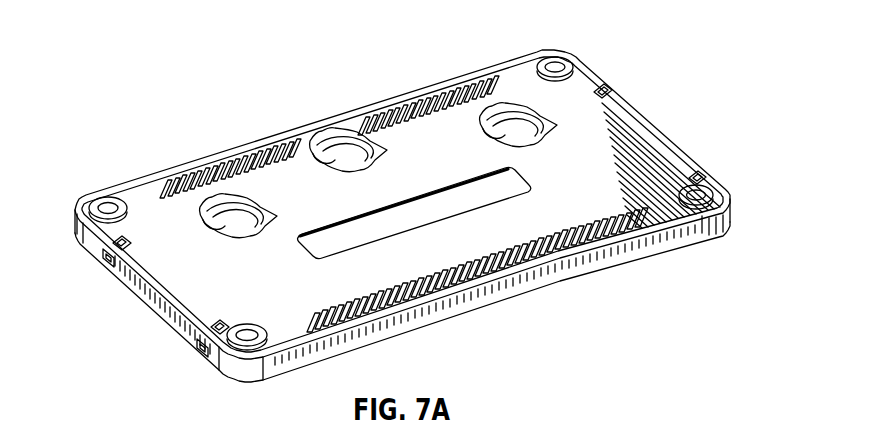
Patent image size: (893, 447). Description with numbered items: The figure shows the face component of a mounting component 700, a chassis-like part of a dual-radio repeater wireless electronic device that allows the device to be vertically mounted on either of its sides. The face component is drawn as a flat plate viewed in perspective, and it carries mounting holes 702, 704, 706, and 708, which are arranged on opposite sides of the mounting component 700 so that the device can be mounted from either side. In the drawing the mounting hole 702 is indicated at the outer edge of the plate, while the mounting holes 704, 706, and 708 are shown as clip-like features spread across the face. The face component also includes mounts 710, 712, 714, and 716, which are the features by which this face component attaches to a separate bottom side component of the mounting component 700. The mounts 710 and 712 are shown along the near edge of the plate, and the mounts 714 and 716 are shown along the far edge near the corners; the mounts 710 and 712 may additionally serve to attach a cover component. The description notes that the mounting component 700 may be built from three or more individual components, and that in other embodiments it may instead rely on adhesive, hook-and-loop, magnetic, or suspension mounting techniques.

The mounting component 700 is at (742, 25).
The mounting hole 702 is at (130, 185).
The mounting hole 704 is at (212, 196).
The mounting hole 706 is at (330, 130).
The mounting hole 708 is at (497, 102).
The mount 710 is at (102, 255).
The mount 712 is at (200, 346).
The mount 714 is at (608, 90).
The mount 716 is at (694, 172).